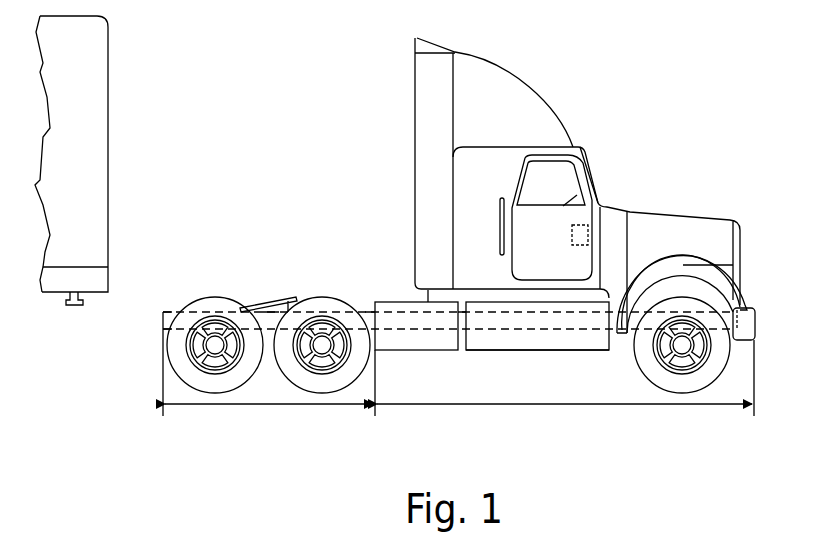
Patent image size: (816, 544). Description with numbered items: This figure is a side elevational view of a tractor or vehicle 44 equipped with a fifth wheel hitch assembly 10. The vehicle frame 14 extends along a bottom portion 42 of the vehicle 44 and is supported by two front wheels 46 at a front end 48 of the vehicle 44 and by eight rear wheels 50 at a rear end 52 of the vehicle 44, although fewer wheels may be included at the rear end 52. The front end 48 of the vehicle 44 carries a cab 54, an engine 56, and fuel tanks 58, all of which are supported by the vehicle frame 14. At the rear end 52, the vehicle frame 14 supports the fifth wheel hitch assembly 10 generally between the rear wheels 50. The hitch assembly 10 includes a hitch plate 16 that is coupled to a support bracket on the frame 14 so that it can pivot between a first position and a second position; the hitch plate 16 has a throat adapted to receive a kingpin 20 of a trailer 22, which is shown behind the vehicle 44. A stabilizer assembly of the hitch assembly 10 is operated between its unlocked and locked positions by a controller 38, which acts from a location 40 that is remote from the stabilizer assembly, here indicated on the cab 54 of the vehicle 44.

The fifth wheel hitch assembly 10 is at (247, 268).
The vehicle frame 14 is at (404, 335).
The hitch plate 16 is at (280, 297).
The kingpin 20 is at (76, 307).
The trailer 22 is at (95, 150).
The controller 38 is at (611, 181).
The location 40 is at (583, 235).
The bottom portion 42 is at (514, 354).
The vehicle 44 is at (594, 96).
The front wheels 46 is at (652, 366).
The front end 48 is at (558, 405).
The rear wheels 50 is at (250, 362).
The rear end 52 is at (270, 406).
The cab 54 is at (502, 165).
The engine 56 is at (657, 236).
The fuel tanks 58 is at (543, 338).